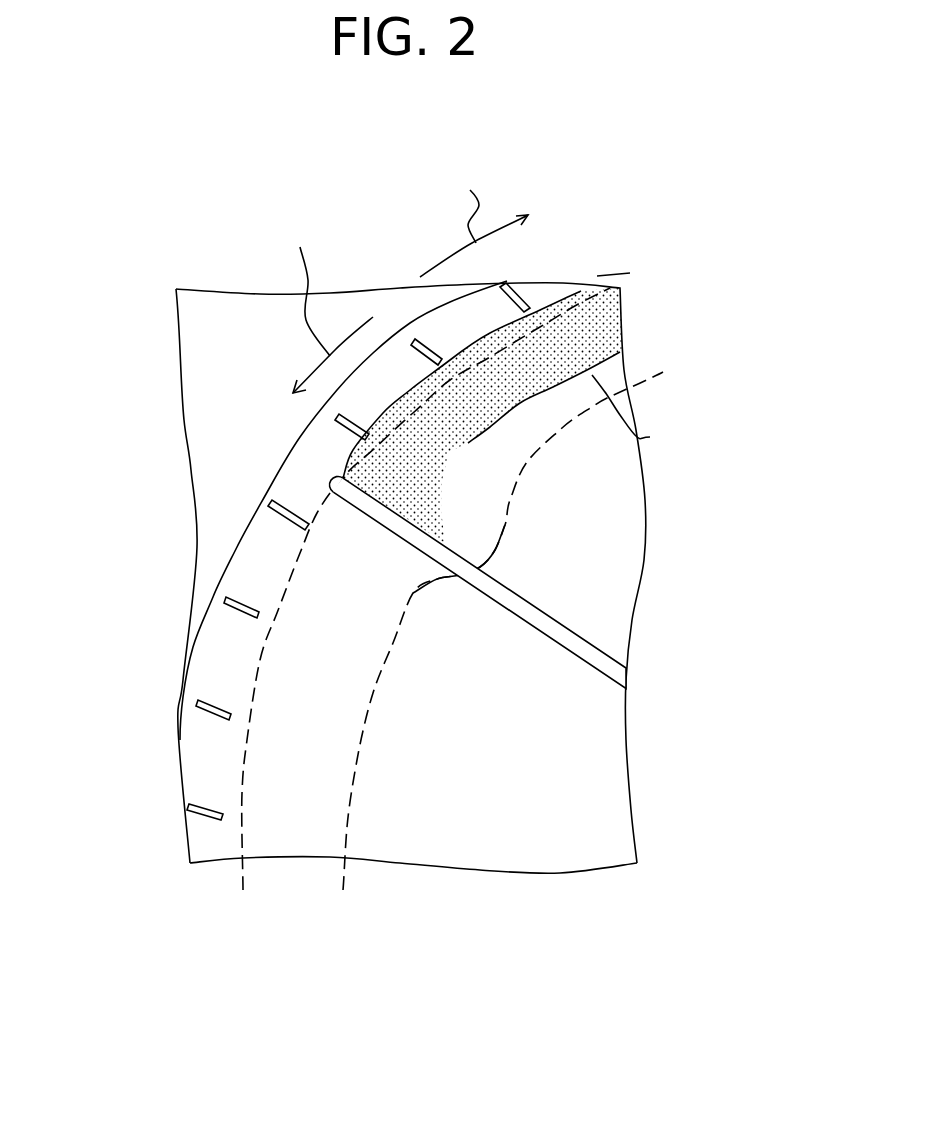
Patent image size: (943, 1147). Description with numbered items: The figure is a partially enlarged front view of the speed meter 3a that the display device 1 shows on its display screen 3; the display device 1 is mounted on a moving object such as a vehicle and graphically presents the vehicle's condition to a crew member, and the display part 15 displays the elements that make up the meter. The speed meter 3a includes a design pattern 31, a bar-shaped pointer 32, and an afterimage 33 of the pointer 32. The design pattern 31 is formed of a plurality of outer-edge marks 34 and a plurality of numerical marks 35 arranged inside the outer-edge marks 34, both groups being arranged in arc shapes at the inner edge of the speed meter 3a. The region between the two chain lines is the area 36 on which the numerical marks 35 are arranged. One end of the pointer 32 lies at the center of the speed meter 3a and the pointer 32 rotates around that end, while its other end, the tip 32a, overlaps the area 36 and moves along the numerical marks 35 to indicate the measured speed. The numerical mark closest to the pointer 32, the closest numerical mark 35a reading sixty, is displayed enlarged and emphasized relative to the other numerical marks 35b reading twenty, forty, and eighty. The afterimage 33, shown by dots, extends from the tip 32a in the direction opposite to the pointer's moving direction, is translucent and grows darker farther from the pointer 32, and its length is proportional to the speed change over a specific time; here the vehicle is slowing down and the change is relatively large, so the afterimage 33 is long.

The display device 1 is at (180, 252).
The display screen 3 is at (192, 468).
The display part 15 is at (423, 565).
The speed meter 3a is at (527, 875).
The design pattern 31 is at (223, 842).
The pointer 32 is at (578, 660).
The tip 32a is at (357, 508).
The afterimage 33 is at (413, 383).
The outer-edge marks 34 is at (213, 720).
The numerical marks 35 is at (423, 630).
The closest numerical mark 35a is at (497, 460).
The other numerical marks 35b is at (303, 640).
The area 36 is at (613, 372).